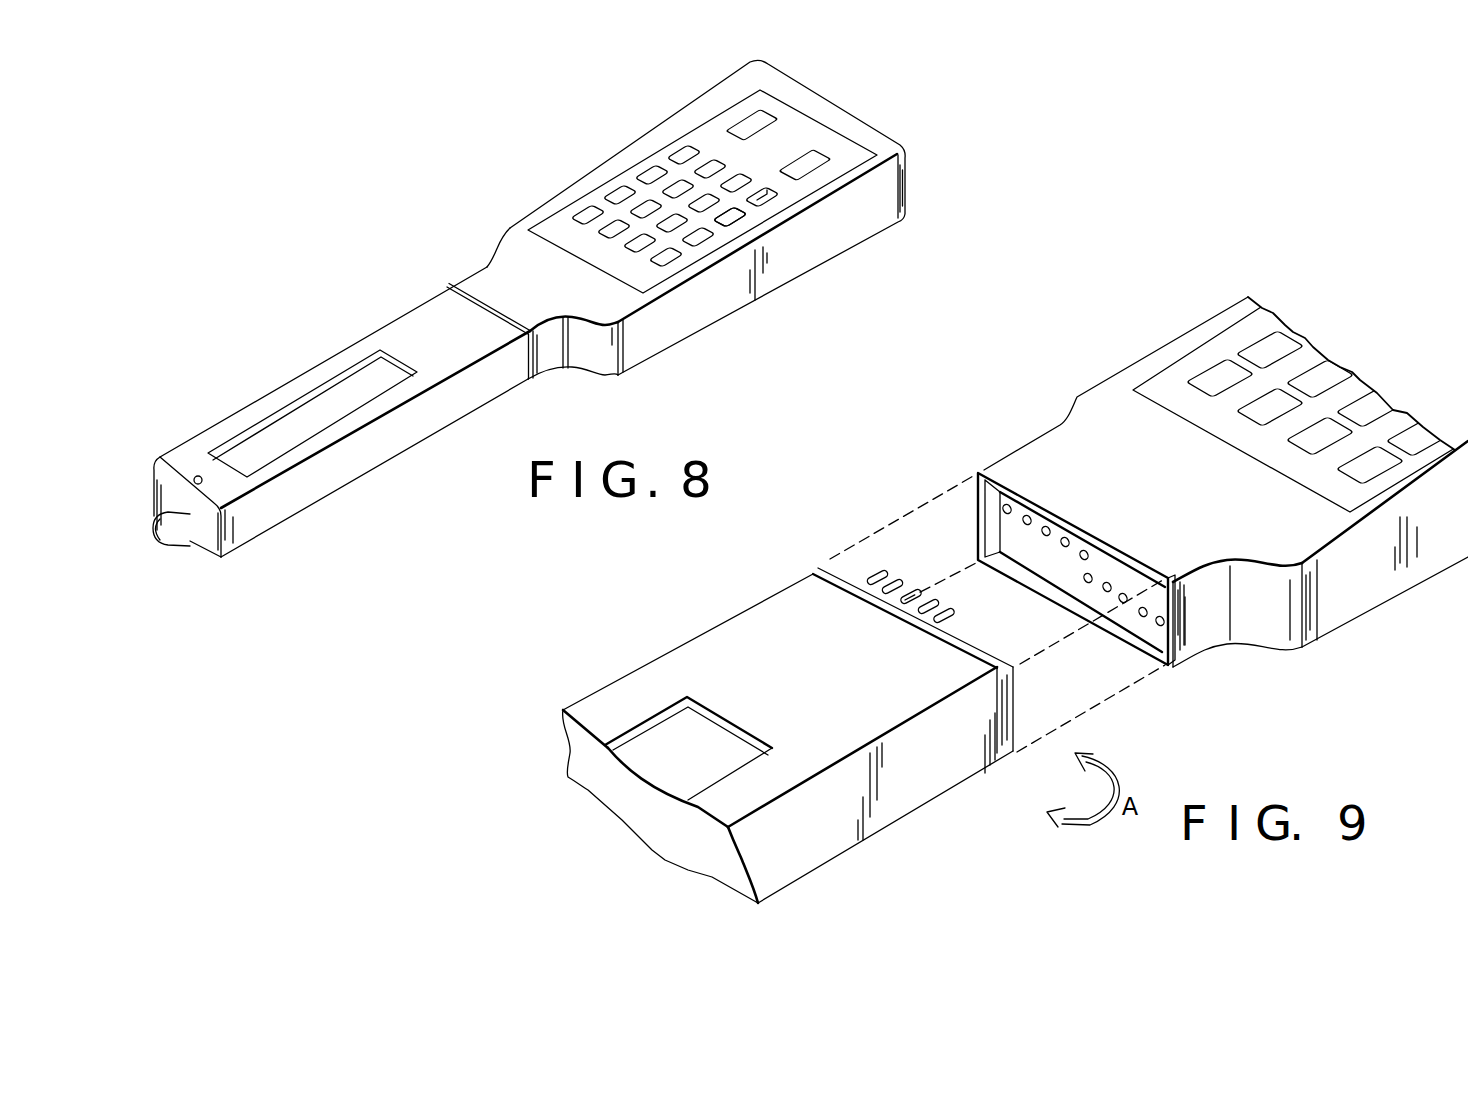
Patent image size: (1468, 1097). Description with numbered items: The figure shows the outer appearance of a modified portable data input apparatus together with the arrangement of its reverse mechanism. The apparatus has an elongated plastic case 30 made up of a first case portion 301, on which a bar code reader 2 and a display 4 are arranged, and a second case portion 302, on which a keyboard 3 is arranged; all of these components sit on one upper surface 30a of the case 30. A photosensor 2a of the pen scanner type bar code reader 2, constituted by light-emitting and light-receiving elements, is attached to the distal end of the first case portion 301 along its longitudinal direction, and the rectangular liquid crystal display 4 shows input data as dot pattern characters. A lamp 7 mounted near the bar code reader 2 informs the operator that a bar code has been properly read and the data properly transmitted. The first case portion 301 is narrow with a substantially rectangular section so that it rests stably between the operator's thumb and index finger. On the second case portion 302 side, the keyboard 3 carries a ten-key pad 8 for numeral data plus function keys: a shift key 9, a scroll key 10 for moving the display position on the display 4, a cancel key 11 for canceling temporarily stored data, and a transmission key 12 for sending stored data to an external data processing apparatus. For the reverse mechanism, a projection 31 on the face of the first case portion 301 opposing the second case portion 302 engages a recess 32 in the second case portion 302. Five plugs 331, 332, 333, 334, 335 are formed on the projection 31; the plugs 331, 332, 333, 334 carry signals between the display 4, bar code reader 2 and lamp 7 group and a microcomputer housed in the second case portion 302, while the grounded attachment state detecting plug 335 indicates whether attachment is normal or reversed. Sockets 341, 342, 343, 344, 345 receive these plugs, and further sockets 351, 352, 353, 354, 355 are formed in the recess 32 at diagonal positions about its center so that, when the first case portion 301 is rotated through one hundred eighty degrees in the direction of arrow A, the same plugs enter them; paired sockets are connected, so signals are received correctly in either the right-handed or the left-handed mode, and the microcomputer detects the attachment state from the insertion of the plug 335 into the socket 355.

In FIG. 8, the bar code reader 2 is at (180, 527).
In FIG. 8, the photosensor 2a is at (156, 541).
In FIG. 8, the keyboard 3 is at (692, 128).
In FIG. 8, the display 4 is at (310, 413).
In FIG. 9, the display 4 is at (665, 738).
In FIG. 8, the lamp 7 is at (193, 477).
In FIG. 8, the ten-key pad 8 is at (627, 187).
In FIG. 9, the ten-key pad 8 is at (1243, 335).
In FIG. 8, the shift key 9 is at (737, 230).
In FIG. 8, the scroll key 10 is at (780, 203).
In FIG. 8, the cancel key 11 is at (745, 118).
In FIG. 8, the transmission key 12 is at (830, 147).
In FIG. 8, the case 30 is at (548, 298).
In FIG. 8, the upper surface 30a is at (509, 256).
In FIG. 9, the upper surface 30a is at (745, 625).
In FIG. 8, the first case portion 301 is at (432, 430).
In FIG. 9, the first case portion 301 is at (928, 795).
In FIG. 8, the second case portion 302 is at (877, 220).
In FIG. 9, the second case portion 302 is at (1375, 595).
In FIG. 9, the projection 31 is at (833, 567).
In FIG. 9, the recess 32 is at (977, 510).
In FIG. 9, the plug 331 is at (885, 568).
In FIG. 9, the plug 332 is at (880, 596).
In FIG. 9, the plug 333 is at (897, 605).
In FIG. 9, the plug 334 is at (940, 602).
In FIG. 9, the attachment state detecting plug 335 is at (950, 617).
In FIG. 9, the socket 341 is at (1006, 504).
In FIG. 9, the socket 342 is at (1027, 515).
In FIG. 9, the socket 343 is at (1047, 527).
In FIG. 9, the socket 344 is at (1069, 540).
In FIG. 9, the socket 345 is at (1089, 556).
In FIG. 9, the socket 351 is at (1164, 625).
In FIG. 9, the socket 352 is at (1143, 617).
In FIG. 9, the socket 353 is at (1124, 603).
In FIG. 9, the socket 354 is at (1105, 592).
In FIG. 9, the socket 355 is at (1085, 582).